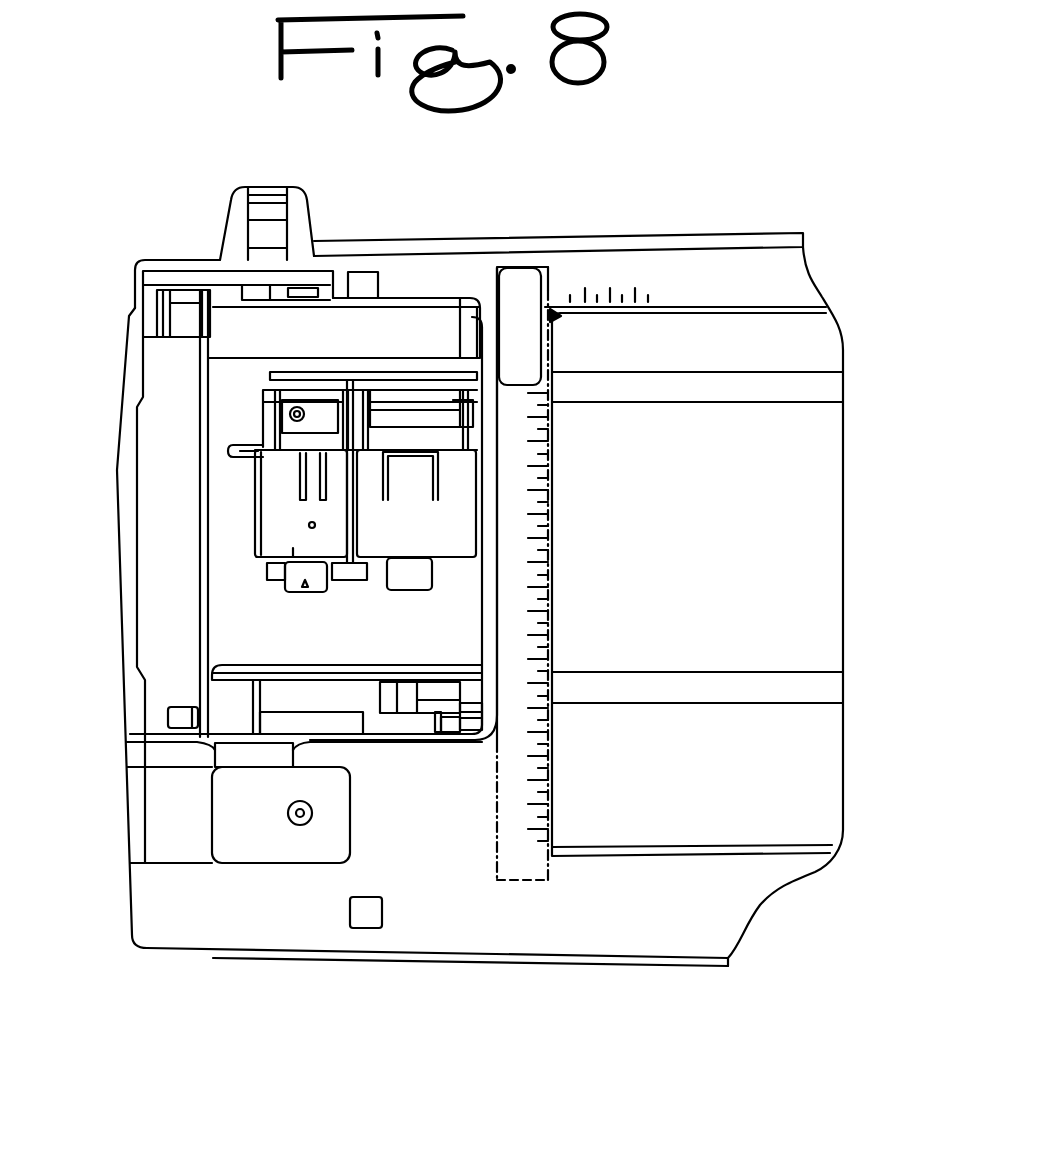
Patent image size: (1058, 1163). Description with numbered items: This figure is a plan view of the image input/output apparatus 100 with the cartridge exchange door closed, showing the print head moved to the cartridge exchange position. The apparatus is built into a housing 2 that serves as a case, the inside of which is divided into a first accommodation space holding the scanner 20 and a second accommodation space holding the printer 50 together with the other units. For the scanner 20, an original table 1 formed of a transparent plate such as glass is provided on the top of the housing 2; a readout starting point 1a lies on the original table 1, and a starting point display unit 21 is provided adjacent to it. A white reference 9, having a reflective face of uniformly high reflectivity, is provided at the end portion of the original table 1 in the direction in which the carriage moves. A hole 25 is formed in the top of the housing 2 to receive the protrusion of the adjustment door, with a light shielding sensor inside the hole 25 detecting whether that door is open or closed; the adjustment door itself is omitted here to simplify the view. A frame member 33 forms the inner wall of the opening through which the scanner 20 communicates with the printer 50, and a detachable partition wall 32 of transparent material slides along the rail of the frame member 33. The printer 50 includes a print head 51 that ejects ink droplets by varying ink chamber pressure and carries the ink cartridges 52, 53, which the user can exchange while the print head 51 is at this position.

The image input/output apparatus 100 is at (626, 232).
The original table 1 is at (818, 346).
The readout starting point 1a is at (556, 310).
The housing 2 is at (664, 940).
The white reference 9 is at (515, 878).
The scanner 20 is at (680, 235).
The starting point display unit 21 is at (516, 290).
The hole 25 is at (178, 713).
The detachable partition wall 32 is at (820, 432).
The frame member 33 is at (822, 386).
The printer 50 is at (237, 637).
The print head 51 is at (242, 493).
The ink cartridge 52 is at (280, 516).
The ink cartridge 53 is at (378, 541).